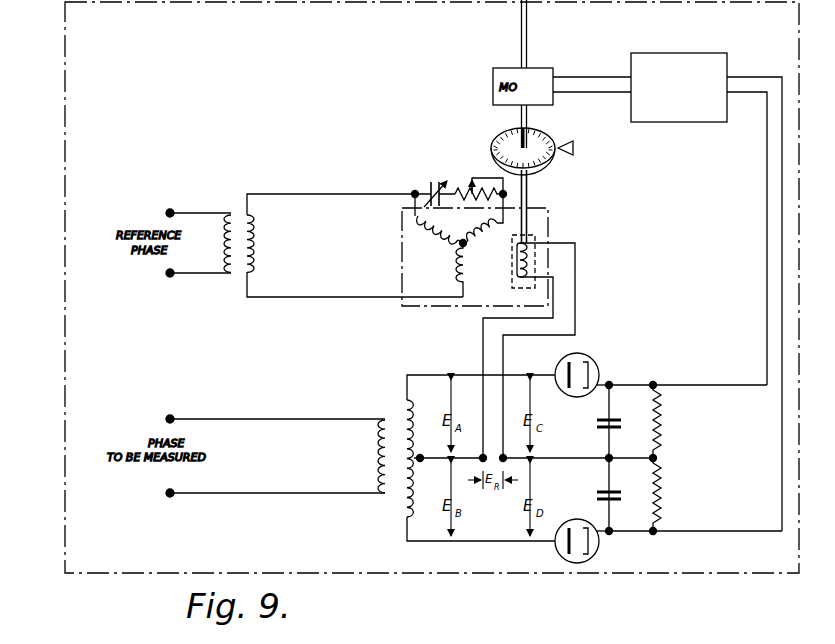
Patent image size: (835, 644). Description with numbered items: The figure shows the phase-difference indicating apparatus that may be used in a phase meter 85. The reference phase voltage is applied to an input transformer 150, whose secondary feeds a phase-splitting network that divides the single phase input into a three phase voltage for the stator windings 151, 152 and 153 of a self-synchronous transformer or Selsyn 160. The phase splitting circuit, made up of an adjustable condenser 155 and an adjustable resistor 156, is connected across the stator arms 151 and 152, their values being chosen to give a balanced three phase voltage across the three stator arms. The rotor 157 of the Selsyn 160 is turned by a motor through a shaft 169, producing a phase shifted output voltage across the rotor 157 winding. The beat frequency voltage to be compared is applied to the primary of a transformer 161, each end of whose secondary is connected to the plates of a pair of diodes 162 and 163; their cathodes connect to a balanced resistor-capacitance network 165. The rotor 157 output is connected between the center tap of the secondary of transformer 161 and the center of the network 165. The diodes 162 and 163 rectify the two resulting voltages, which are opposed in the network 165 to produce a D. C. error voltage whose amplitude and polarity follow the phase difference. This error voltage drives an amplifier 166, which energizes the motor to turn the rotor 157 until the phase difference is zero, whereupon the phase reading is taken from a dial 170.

The phase meter 85 is at (65, 262).
The input transformer 150 is at (241, 194).
The stator winding 151 is at (428, 231).
The stator winding 152 is at (479, 238).
The stator winding 153 is at (456, 281).
The adjustable condenser 155 is at (428, 186).
The adjustable resistor 156 is at (465, 184).
The rotor 157 is at (528, 256).
The self-synchronous transformer 160 is at (402, 246).
The transformer 161 is at (393, 411).
The diode 162 is at (598, 370).
The diode 163 is at (597, 554).
The balanced resistor-capacitance network 165 is at (714, 448).
The amplifier 166 is at (685, 57).
The shaft 169 is at (531, 196).
The dial 170 is at (554, 140).